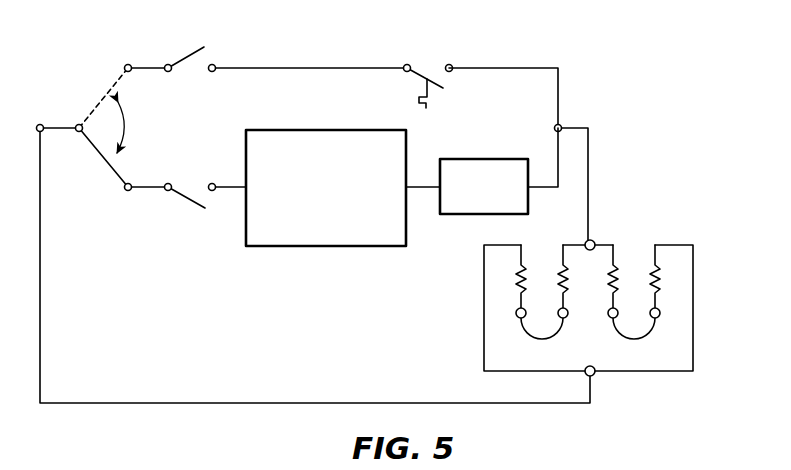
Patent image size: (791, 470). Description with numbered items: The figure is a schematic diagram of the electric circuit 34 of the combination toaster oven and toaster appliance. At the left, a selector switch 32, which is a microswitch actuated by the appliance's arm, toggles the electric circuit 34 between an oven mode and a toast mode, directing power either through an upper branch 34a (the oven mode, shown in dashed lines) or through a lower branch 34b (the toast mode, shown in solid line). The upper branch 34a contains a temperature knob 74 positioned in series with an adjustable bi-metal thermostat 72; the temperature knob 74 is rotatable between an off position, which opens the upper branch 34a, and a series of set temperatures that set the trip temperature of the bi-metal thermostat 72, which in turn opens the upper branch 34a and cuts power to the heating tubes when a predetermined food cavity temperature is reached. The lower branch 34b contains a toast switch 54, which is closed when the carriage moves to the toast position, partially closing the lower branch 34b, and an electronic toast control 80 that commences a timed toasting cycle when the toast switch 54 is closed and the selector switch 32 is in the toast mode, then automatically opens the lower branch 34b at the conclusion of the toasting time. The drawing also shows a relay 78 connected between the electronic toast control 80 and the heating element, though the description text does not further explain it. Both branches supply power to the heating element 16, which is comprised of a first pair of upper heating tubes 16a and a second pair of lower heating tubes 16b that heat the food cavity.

The heating element 16 is at (601, 287).
The upper heating tubes 16a is at (567, 275).
The lower heating tubes 16b is at (654, 277).
The selector switch 32 is at (92, 88).
The electric circuit 34 is at (603, 121).
The upper branch 34a is at (529, 52).
The lower branch 34b is at (222, 213).
The toast switch 54 is at (187, 208).
The bi-metal thermostat 72 is at (433, 54).
The temperature knob 74 is at (216, 50).
The relay 78 is at (485, 159).
The electronic toast control 80 is at (327, 130).